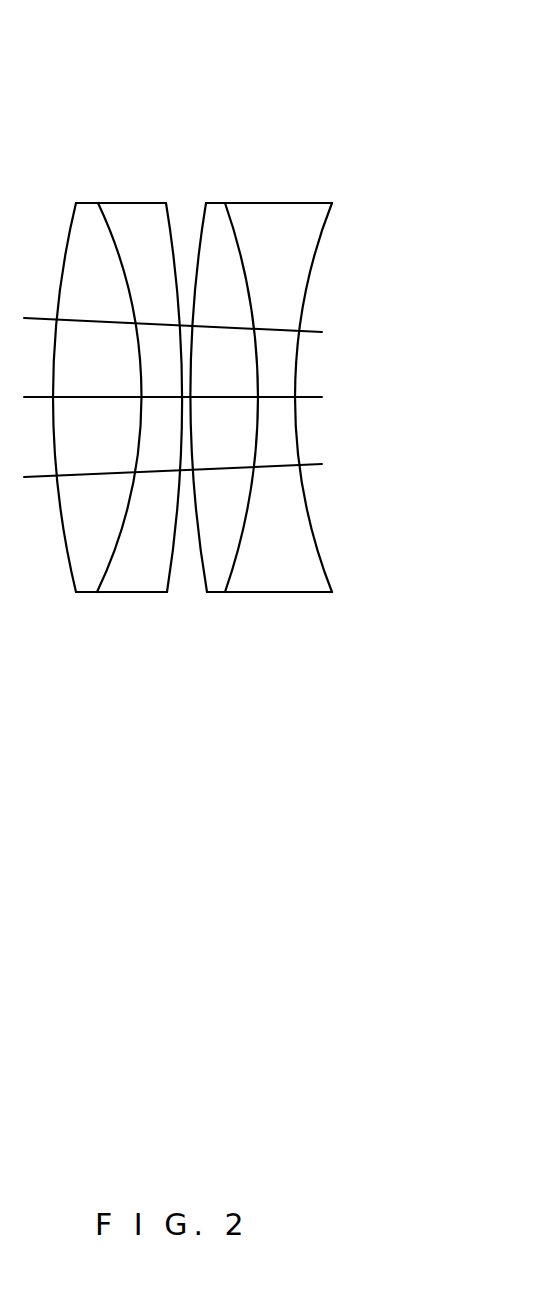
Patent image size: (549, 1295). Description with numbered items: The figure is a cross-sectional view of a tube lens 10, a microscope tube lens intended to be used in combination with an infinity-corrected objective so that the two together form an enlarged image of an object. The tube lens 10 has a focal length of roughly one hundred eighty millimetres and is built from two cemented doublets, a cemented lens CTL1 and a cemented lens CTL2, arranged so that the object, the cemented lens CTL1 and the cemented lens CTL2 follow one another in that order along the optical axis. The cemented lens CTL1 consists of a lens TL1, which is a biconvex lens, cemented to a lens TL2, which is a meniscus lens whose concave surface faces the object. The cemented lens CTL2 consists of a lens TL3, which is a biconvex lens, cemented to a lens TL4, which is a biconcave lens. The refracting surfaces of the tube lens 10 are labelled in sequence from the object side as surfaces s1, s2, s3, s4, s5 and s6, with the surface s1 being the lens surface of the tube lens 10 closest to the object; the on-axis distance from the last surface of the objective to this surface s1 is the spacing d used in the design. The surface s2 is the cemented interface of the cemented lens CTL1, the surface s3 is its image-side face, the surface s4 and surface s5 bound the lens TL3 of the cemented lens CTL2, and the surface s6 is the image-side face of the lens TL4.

The tube lens 10 is at (490, 86).
The cemented lens CTL1 is at (182, 760).
The cemented lens CTL2 is at (355, 760).
The lens TL1 is at (92, 548).
The lens TL2 is at (152, 552).
The lens TL3 is at (215, 557).
The lens TL4 is at (287, 560).
The lens surface s1 is at (71, 241).
The second lens surface (cemented surface) s2 is at (117, 248).
The third lens surface s3 is at (172, 243).
The fourth lens surface s4 is at (198, 250).
The fifth lens surface (cemented surface) s5 is at (240, 250).
The sixth lens surface s6 is at (318, 238).